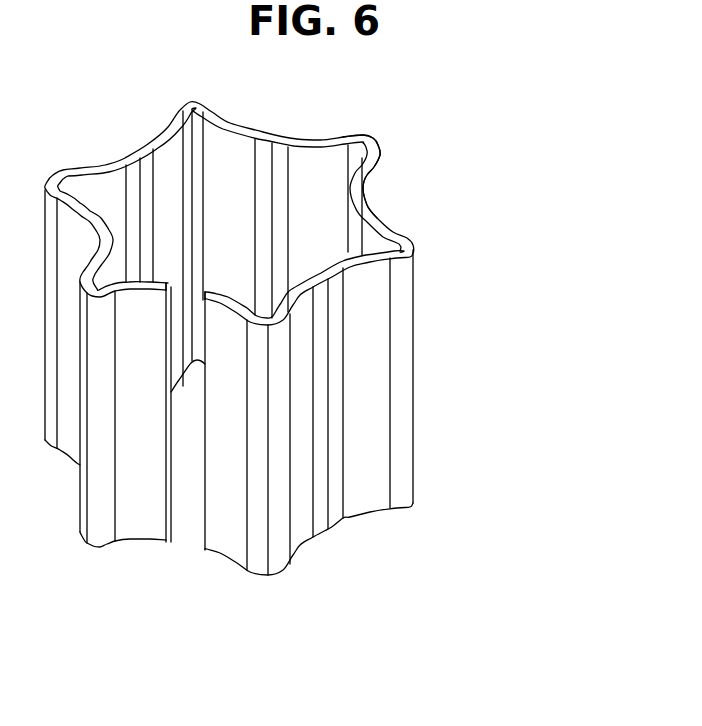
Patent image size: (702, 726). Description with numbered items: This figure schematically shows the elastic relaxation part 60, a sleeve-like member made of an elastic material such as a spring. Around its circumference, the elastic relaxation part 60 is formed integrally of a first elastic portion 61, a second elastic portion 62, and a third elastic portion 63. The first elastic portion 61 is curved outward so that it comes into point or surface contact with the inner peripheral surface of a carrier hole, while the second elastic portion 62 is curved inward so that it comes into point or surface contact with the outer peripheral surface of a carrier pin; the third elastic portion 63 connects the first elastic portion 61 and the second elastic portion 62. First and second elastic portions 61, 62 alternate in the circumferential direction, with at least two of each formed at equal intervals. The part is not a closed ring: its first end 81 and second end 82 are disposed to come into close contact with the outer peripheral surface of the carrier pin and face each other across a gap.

The elastic relaxation part 60 is at (310, 388).
The first elastic portion 61 is at (372, 142).
The second elastic portion 62 is at (372, 197).
The third elastic portion 63 is at (367, 177).
The first end 81 is at (170, 525).
The second end 82 is at (205, 533).